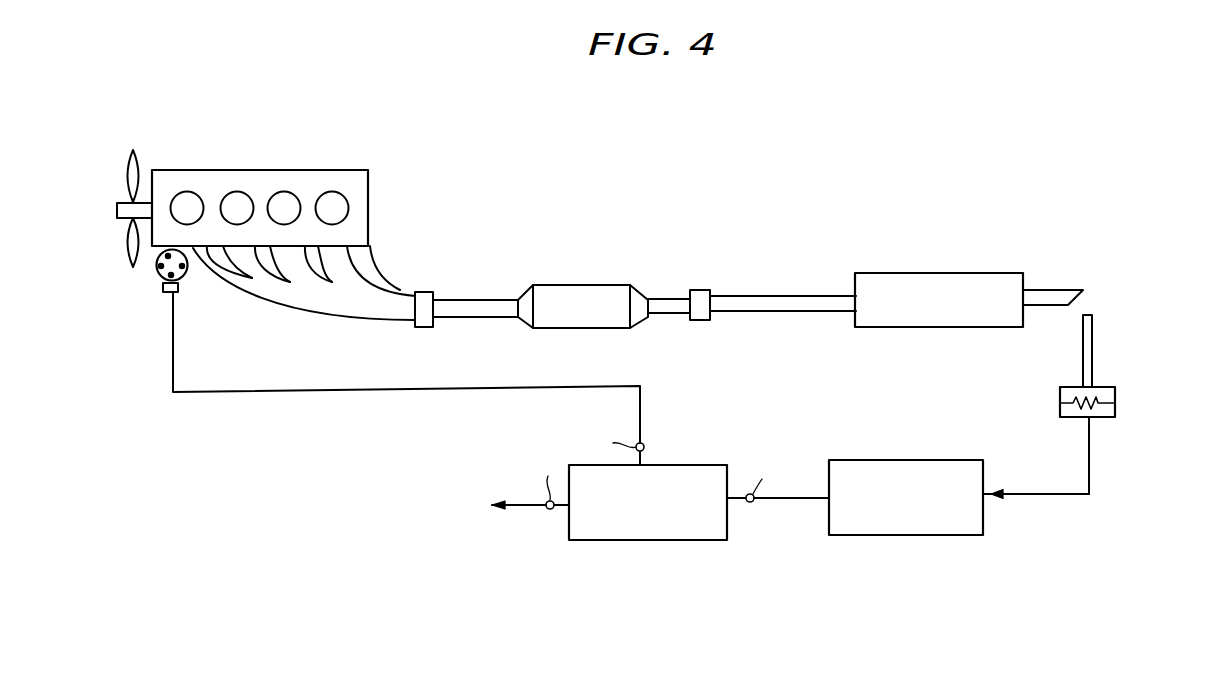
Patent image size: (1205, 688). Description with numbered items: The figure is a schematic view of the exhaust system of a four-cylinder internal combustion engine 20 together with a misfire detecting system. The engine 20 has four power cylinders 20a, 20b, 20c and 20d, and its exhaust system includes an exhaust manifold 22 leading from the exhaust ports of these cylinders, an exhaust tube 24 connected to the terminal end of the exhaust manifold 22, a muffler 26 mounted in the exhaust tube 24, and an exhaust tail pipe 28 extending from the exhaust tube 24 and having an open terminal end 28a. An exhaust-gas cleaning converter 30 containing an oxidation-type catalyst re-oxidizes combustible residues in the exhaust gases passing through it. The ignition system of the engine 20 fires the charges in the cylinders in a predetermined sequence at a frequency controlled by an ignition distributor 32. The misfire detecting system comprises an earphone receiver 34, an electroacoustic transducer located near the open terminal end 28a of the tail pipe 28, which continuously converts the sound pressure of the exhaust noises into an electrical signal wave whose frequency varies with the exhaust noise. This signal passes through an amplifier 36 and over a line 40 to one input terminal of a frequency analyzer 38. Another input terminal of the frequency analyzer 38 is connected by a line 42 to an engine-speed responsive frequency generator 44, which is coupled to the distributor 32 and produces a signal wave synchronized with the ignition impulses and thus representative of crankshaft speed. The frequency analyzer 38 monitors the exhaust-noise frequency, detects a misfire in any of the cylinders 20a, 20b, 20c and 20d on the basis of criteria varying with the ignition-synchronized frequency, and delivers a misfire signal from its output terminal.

The internal combustion engine 20 is at (369, 200).
The power cylinder 20a is at (187, 191).
The power cylinder 20b is at (237, 191).
The power cylinder 20c is at (284, 191).
The power cylinder 20d is at (332, 191).
The exhaust manifold 22 is at (389, 291).
The exhaust tube 24 is at (467, 299).
The muffler 26 is at (576, 284).
The exhaust tail pipe 28 is at (775, 295).
The open terminal end 28a is at (1086, 289).
The exhaust-gas cleaning converter 30 is at (934, 272).
The ignition distributor 32 is at (186, 278).
The earphone receiver 34 is at (1060, 409).
The amplifier 36 is at (917, 459).
The frequency analyzer 38 is at (672, 464).
The line 40 is at (778, 497).
The line 42 is at (443, 389).
The engine-speed responsive frequency generator 44 is at (162, 288).